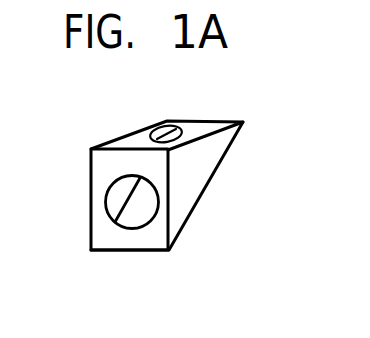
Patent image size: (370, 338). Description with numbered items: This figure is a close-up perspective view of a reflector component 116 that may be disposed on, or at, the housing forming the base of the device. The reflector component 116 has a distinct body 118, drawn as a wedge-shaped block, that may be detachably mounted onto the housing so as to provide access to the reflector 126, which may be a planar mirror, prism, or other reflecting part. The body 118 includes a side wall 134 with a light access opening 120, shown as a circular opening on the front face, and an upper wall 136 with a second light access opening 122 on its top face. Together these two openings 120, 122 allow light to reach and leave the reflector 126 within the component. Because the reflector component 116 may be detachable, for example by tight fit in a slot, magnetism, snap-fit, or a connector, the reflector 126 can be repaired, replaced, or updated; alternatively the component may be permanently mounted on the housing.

The reflector component 116 is at (82, 134).
The body 118 is at (98, 168).
The light access opening 120 is at (135, 235).
The light access opening 122 is at (150, 137).
The reflector 126 is at (200, 173).
The side wall 134 is at (105, 240).
The upper wall 136 is at (203, 125).